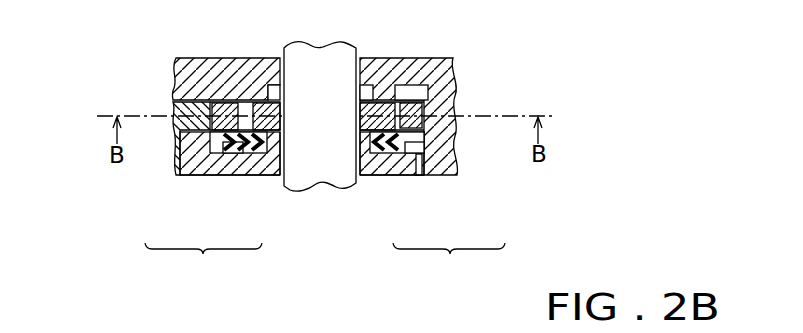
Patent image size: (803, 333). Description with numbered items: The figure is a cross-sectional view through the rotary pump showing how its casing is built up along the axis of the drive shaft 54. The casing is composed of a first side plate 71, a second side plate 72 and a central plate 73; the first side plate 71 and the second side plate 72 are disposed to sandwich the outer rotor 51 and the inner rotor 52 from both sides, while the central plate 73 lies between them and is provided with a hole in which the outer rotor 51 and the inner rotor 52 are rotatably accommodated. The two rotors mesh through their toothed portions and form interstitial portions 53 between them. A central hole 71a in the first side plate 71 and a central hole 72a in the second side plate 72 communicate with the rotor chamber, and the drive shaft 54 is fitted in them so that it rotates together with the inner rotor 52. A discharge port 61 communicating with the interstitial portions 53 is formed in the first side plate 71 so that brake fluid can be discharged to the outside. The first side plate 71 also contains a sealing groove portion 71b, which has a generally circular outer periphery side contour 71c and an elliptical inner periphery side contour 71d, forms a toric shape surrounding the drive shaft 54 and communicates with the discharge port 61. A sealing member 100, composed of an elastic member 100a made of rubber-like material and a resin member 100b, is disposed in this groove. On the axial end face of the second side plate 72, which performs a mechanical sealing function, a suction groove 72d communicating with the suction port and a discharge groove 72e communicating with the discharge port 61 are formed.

The outer rotor 51 is at (420, 151).
The inner rotor 52 is at (424, 107).
The interstitial portions 53 is at (424, 124).
The drive shaft 54 is at (322, 73).
The discharge port 61 is at (424, 166).
The first side plate 71 is at (265, 172).
The central hole 71a is at (358, 176).
The sealing groove portion 71b is at (226, 154).
The outer periphery side contour 71c is at (205, 138).
The inner periphery side contour 71d is at (281, 175).
The second side plate 72 is at (437, 60).
The central hole 72a is at (366, 85).
The suction groove 72d is at (273, 97).
The discharge groove 72e is at (404, 92).
The central plate 73 is at (184, 110).
The sealing member 100 is at (325, 260).
The elastic member 100a is at (246, 166).
The resin member 100b is at (200, 168).